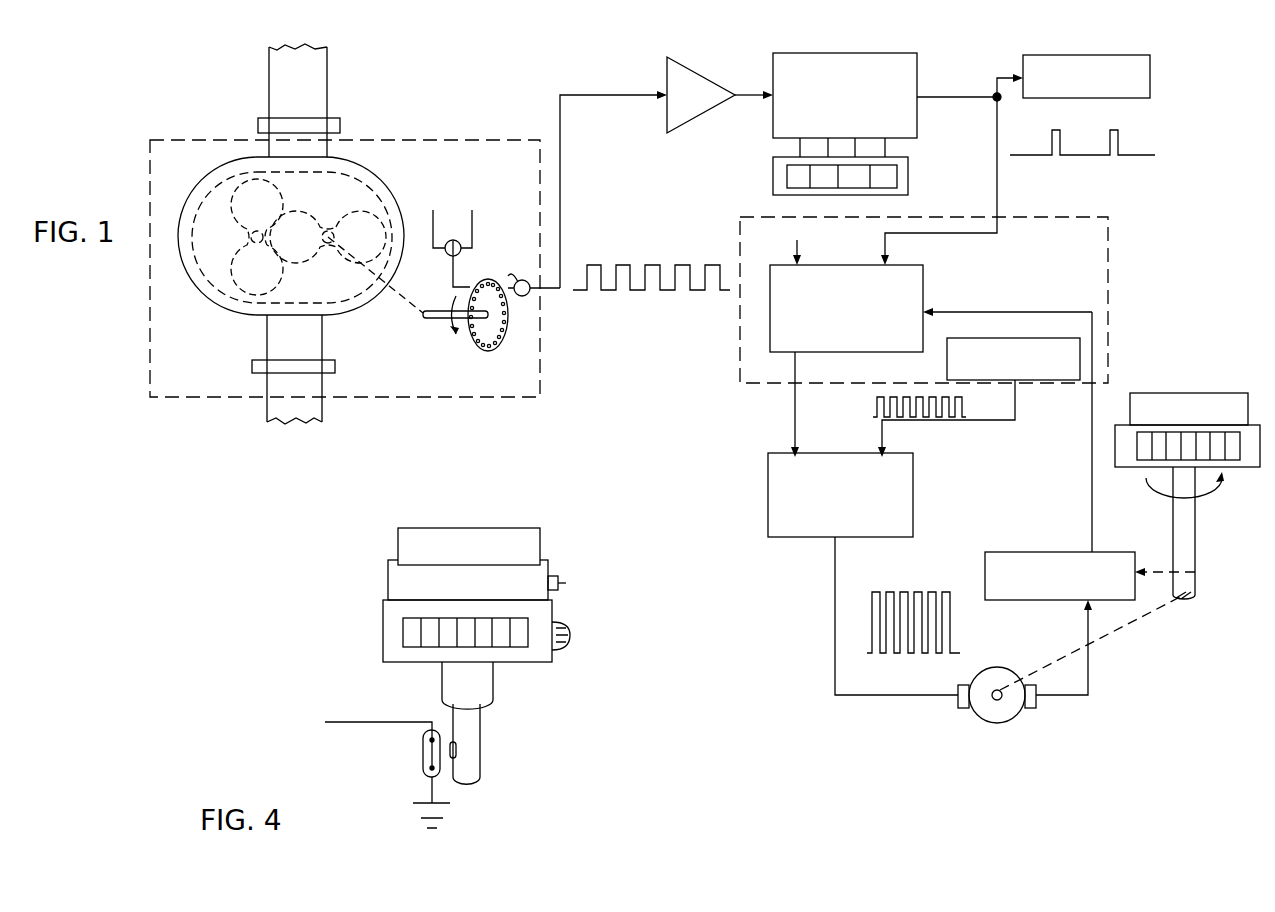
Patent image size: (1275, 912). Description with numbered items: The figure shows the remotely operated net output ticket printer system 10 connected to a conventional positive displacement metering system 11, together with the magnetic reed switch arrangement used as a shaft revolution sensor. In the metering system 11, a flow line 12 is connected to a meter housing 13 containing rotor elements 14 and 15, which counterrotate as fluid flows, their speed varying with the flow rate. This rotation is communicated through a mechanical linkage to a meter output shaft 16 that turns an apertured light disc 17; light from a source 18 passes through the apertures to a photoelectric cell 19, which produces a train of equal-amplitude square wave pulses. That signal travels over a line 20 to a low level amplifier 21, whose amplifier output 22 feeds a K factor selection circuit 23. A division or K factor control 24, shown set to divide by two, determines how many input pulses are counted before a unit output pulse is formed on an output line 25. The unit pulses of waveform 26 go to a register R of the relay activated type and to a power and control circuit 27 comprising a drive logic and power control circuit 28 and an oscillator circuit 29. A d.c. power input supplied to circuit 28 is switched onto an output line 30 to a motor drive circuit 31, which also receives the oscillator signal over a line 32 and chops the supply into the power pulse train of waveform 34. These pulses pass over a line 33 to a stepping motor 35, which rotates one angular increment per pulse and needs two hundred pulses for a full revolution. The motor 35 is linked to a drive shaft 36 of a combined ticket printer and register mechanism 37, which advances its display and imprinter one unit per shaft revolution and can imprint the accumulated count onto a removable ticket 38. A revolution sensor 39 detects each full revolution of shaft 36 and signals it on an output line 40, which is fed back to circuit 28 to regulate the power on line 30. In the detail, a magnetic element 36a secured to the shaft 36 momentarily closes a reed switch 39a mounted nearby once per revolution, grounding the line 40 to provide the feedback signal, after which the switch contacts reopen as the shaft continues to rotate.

In FIG. 1, the remotely operated net output ticket printer system 10 is at (666, 439).
In FIG. 1, the positive displacement type metering system 11 is at (203, 140).
In FIG. 1, the flow line 12 is at (328, 98).
In FIG. 1, the meter housing 13 is at (374, 163).
In FIG. 1, the rotor element 14 is at (258, 292).
In FIG. 1, the rotor element 15 is at (384, 232).
In FIG. 1, the meter output shaft 16 is at (440, 318).
In FIG. 1, the apertured light disc 17 is at (496, 351).
In FIG. 1, the light source 18 is at (462, 249).
In FIG. 1, the photoelectric cell 19 is at (515, 297).
In FIG. 1, the line 20 is at (562, 217).
In FIG. 1, the low level amplifier 21 is at (701, 95).
In FIG. 1, the amplifier output 22 is at (748, 97).
In FIG. 1, the K factor selection circuit 23 is at (826, 53).
In FIG. 1, the division or K factor control 24 is at (773, 177).
In FIG. 1, the output line 25 is at (935, 97).
In FIG. 1, the waveform 26 is at (1098, 163).
In FIG. 1, the power and control circuit 27 is at (1108, 290).
In FIG. 1, the drive logic and power control circuit 28 is at (905, 266).
In FIG. 1, the oscillator circuit 29 is at (1025, 340).
In FIG. 1, the output line 30 is at (795, 429).
In FIG. 1, the motor drive circuit 31 is at (768, 509).
In FIG. 1, the line 32 is at (960, 421).
In FIG. 1, the line 33 is at (835, 626).
In FIG. 1, the waveform 34 is at (913, 581).
In FIG. 1, the stepping motor 35 is at (990, 723).
In FIG. 1, the drive shaft 36 is at (1196, 553).
In FIG. 4, the drive shaft 36 is at (480, 721).
In FIG. 1, the combined ticket printer and register mechanism 37 is at (1215, 479).
In FIG. 4, the combined ticket printer and register mechanism 37 is at (528, 662).
In FIG. 1, the ticket 38 is at (1210, 393).
In FIG. 4, the ticket 38 is at (540, 542).
In FIG. 1, the revolution sensor 39 is at (1010, 552).
In FIG. 1, the output line 40 is at (1092, 505).
In FIG. 4, the output line 40 is at (333, 722).
In FIG. 1, the register R is at (1128, 55).
In FIG. 4, the magnetic element 36a is at (458, 755).
In FIG. 4, the reed switch 39a is at (440, 778).